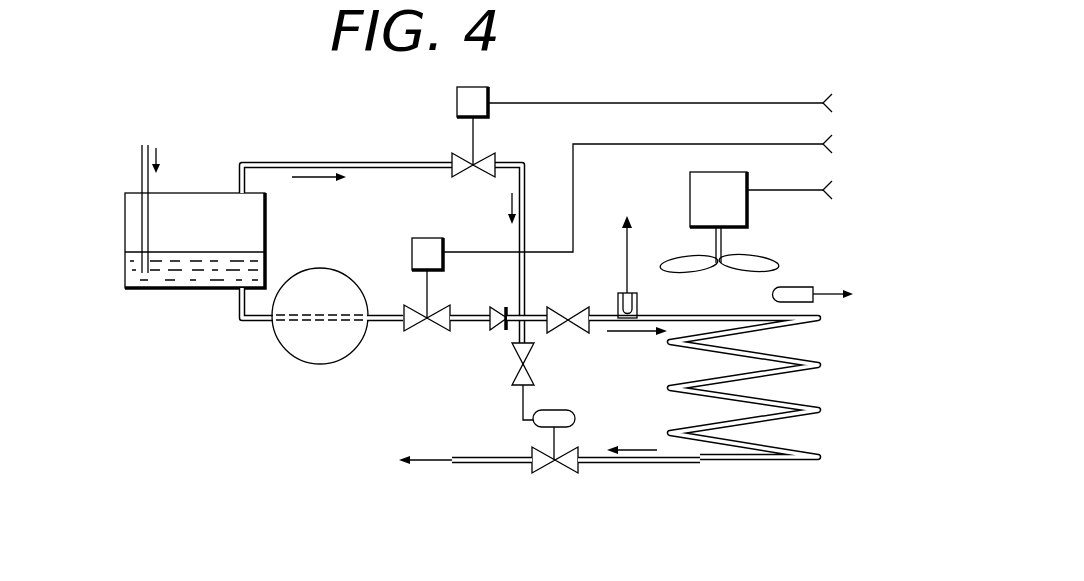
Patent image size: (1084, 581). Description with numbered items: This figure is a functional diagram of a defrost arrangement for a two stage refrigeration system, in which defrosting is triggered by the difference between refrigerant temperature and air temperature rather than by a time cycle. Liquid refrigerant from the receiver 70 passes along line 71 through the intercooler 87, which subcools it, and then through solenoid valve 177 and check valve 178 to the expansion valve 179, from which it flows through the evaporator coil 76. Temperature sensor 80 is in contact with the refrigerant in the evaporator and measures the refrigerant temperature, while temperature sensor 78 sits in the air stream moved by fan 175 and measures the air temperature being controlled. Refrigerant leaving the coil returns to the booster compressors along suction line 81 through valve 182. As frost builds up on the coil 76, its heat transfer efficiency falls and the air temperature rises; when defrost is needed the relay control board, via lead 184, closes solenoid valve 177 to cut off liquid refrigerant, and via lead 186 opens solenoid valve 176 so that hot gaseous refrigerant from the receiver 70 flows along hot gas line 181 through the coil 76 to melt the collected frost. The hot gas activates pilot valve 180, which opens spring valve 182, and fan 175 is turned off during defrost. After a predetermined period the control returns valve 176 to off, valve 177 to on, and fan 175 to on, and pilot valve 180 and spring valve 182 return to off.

The receiver 70 is at (125, 242).
The liquid line from receiver to intercooler 71 is at (240, 323).
The hot gas line 181 is at (274, 162).
The intercooler 87 is at (325, 268).
The solenoid valve 176 is at (457, 110).
The solenoid valve 177 is at (421, 238).
The check valve C 178 is at (499, 329).
The expansion valve 179 is at (569, 329).
The pilot valve 180 is at (513, 366).
The suction line 81 is at (528, 450).
The spring valve 182 is at (559, 470).
The evaporator coil 76 is at (807, 390).
The temperature sensor 78 is at (805, 288).
The temperature sensor 80 is at (619, 297).
The fan 175 is at (690, 190).
The lead 184 is at (599, 144).
The lead 186 is at (640, 103).